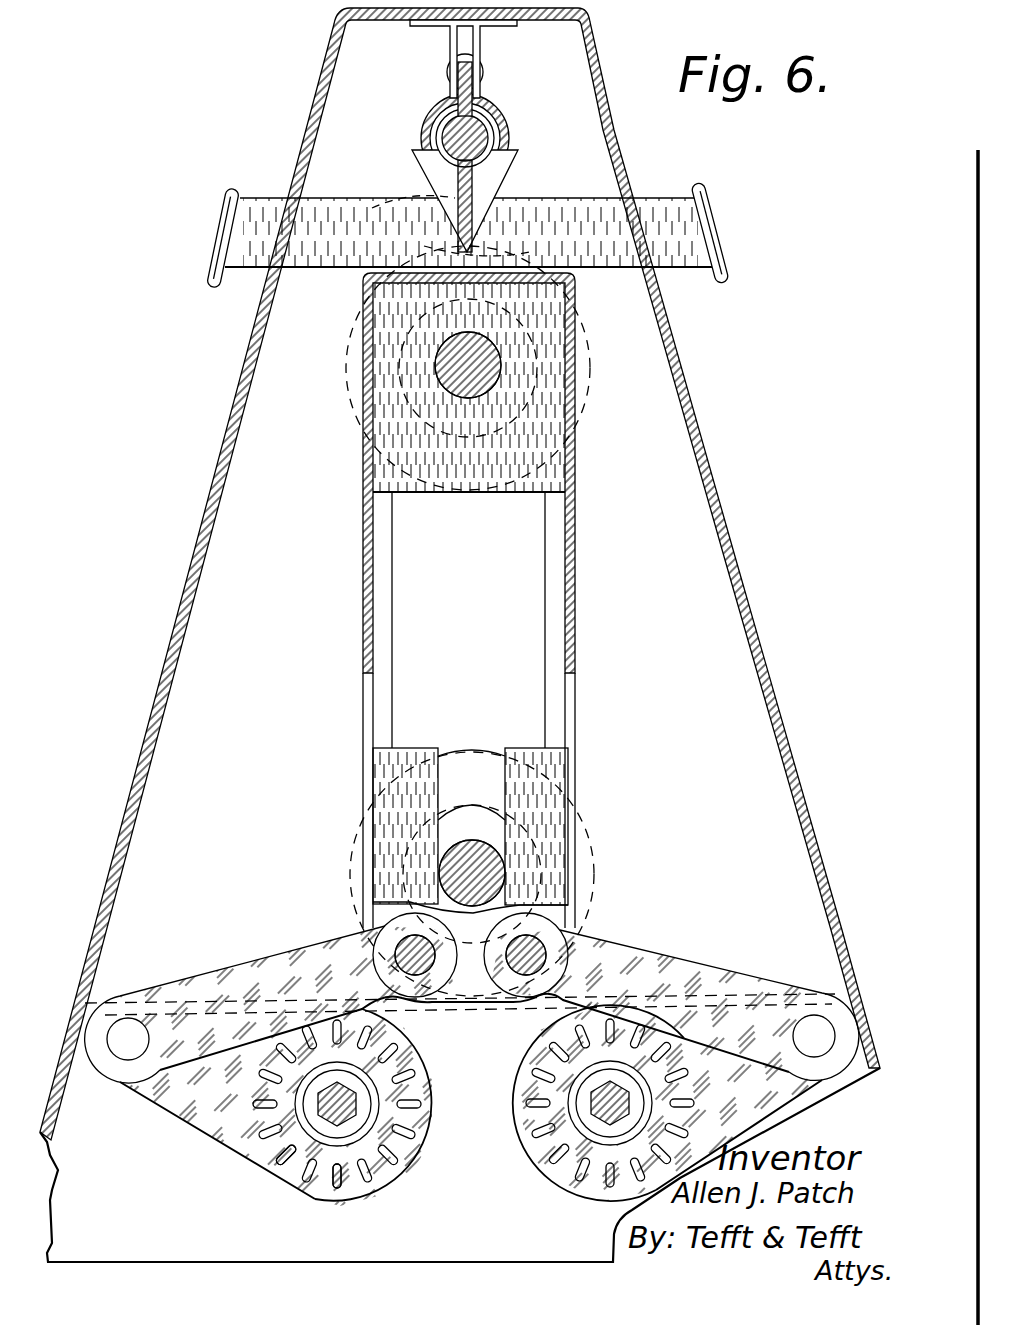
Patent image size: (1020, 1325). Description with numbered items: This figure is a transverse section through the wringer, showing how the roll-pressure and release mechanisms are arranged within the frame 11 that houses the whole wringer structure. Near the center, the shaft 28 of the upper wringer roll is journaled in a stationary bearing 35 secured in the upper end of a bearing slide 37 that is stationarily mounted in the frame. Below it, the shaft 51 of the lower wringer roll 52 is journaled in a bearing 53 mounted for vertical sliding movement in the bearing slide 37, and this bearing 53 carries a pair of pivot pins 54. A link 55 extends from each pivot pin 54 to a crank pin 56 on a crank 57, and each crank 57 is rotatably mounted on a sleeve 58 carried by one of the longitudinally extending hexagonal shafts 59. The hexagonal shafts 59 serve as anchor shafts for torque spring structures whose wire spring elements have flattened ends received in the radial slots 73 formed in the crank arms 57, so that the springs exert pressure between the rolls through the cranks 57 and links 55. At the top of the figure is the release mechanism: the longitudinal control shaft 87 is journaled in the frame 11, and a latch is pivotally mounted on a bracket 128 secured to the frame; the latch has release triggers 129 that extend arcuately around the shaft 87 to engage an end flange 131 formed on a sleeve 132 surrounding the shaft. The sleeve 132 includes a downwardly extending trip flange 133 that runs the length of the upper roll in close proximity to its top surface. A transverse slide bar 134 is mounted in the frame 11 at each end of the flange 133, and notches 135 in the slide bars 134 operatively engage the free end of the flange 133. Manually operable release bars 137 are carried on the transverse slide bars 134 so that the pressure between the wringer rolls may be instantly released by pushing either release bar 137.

The frame 11 is at (728, 455).
The shaft of the upper wringer roll 28 is at (489, 370).
The stationary bearing 35 is at (543, 438).
The bearing slide 37 is at (560, 620).
The shaft of the lower wringer roll 51 is at (468, 863).
The lower wringer roll 52 is at (472, 763).
The bearing 53 is at (560, 790).
The pivot pin 54 is at (417, 951).
The link 55 is at (237, 973).
The crank pin 56 is at (128, 1033).
The crank 57 is at (208, 1118).
The sleeve 58 is at (355, 1127).
The hexagonal shaft 59 is at (357, 1101).
The radial slot 73 is at (332, 1182).
The control shaft 87 is at (488, 118).
The bracket 128 is at (481, 42).
The release trigger 129 is at (426, 118).
The end flange 131 is at (428, 167).
The sleeve 132 is at (482, 160).
The trip flange 133 is at (458, 206).
The transverse slide bar 134 is at (690, 262).
The notch 135 is at (384, 208).
The release bar 137 is at (219, 232).